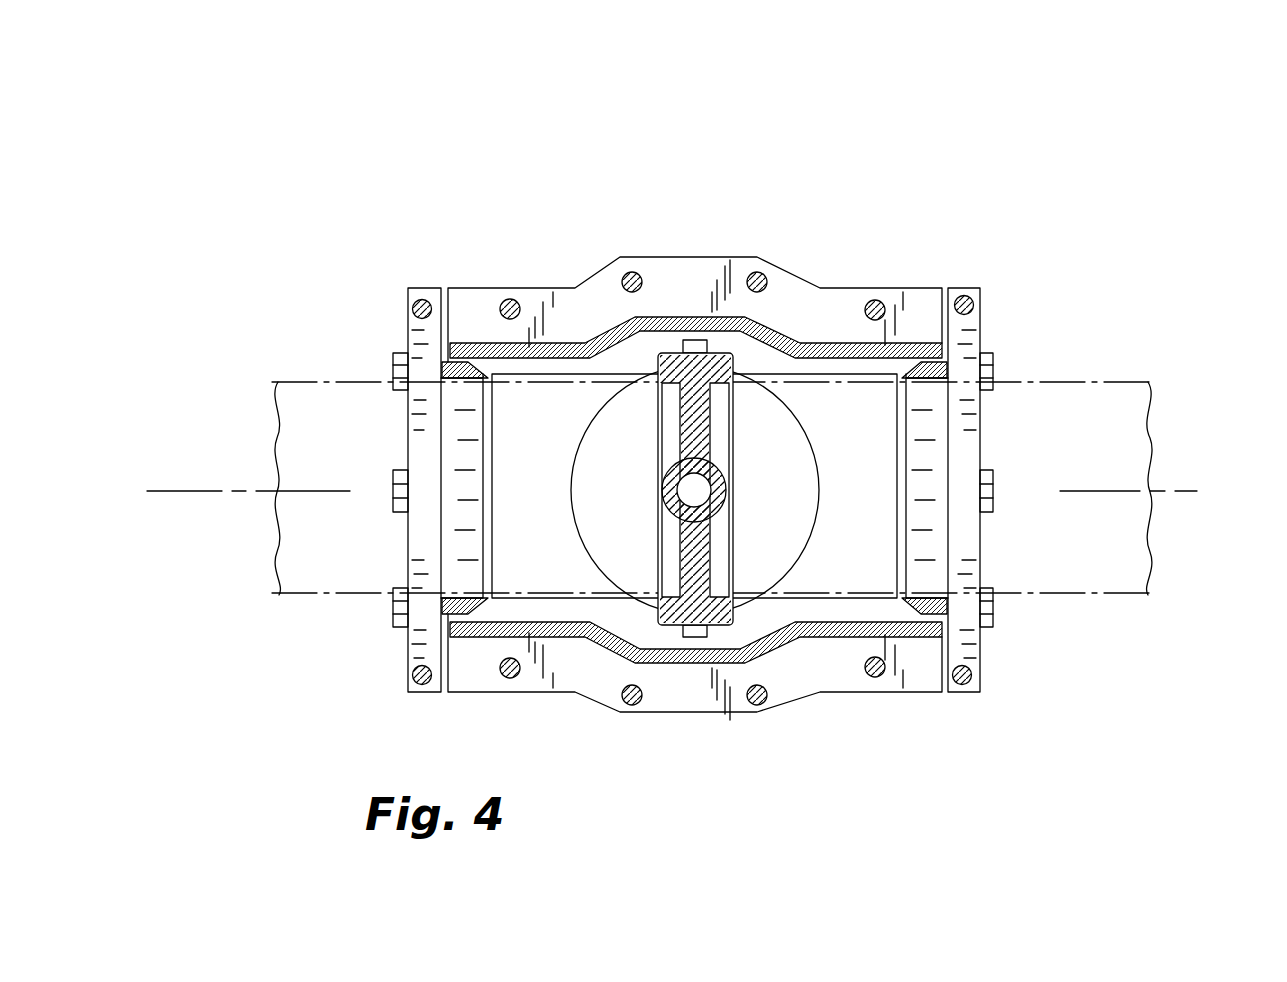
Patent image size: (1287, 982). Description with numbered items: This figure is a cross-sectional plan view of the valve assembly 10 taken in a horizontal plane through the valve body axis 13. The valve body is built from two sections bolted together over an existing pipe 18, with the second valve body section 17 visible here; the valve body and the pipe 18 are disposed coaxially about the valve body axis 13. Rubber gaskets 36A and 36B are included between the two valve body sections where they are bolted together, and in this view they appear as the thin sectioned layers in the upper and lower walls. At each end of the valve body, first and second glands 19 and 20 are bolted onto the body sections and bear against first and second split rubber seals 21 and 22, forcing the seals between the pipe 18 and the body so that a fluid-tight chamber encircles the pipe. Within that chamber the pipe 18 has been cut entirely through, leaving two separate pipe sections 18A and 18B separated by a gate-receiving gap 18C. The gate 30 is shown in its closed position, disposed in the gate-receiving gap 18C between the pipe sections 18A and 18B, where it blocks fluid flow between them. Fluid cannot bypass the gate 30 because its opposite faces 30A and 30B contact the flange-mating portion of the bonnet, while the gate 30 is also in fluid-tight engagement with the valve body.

The valve assembly 10 is at (203, 165).
The valve body axis 13 is at (150, 492).
The second valve body section 17 is at (482, 285).
The existing pipe 18 is at (270, 380).
The first pipe section 18A is at (279, 596).
The second pipe section 18B is at (1126, 596).
The gate-receiving gap 18C is at (767, 393).
The first gland 19 is at (414, 699).
The second gland 20 is at (962, 699).
The first split rubber seal 21 is at (452, 614).
The second split rubber seal 22 is at (938, 614).
The gate 30 is at (698, 488).
The first face of the gate 30A is at (660, 622).
The second face of the gate 30B is at (730, 622).
The first rubber gasket 36A is at (732, 320).
The second rubber gasket 36B is at (697, 665).